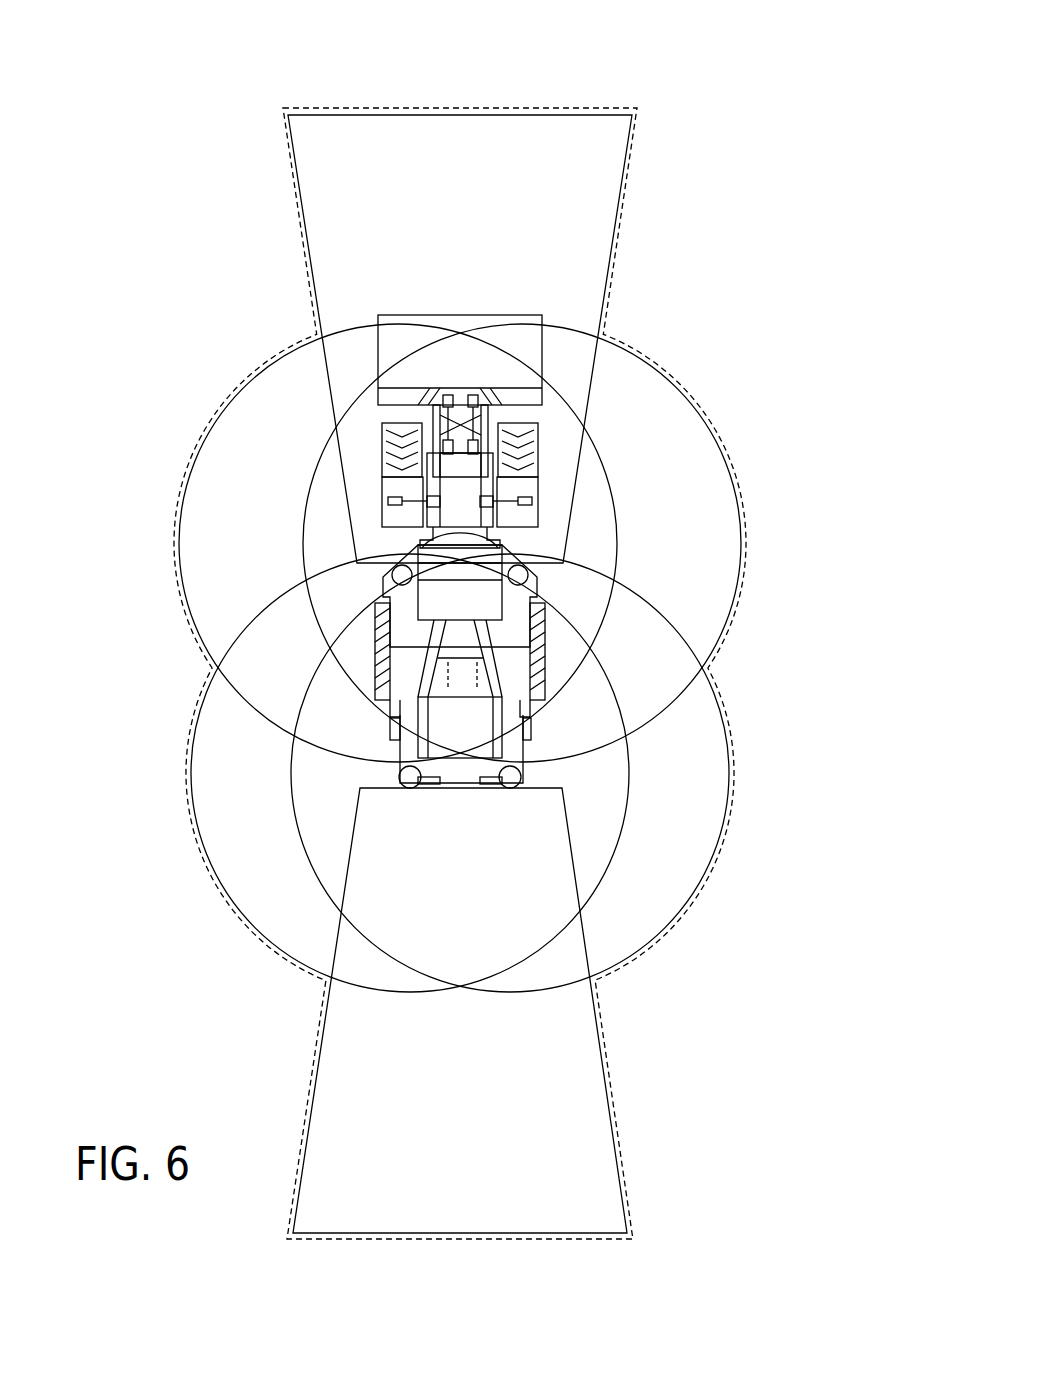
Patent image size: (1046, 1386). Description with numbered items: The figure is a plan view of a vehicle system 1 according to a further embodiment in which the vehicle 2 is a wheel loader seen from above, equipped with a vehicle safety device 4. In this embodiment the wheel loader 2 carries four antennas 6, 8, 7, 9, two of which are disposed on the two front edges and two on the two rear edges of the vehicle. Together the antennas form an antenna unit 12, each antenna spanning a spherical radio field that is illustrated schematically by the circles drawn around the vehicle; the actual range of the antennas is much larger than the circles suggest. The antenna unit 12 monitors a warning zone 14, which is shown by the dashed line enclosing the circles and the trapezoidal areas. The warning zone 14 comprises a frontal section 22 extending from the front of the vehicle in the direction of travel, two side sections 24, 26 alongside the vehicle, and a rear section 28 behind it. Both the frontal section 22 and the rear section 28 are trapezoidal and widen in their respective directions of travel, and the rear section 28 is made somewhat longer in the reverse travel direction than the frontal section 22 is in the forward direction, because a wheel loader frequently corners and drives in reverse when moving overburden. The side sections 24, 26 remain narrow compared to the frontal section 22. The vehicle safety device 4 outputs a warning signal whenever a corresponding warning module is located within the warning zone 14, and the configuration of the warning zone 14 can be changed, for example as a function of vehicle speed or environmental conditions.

The vehicle system 1 is at (713, 277).
The vehicle 2 is at (550, 624).
The vehicle safety device 4 is at (737, 337).
The first antenna 6 is at (385, 578).
The antenna 7 is at (397, 775).
The second antenna 8 is at (537, 574).
The antenna 9 is at (525, 779).
The antenna unit 12 is at (760, 678).
The warning zone 14 is at (357, 107).
The frontal section 22 is at (545, 155).
The side section 24 is at (220, 760).
The side section 26 is at (680, 777).
The rear section 28 is at (470, 1197).